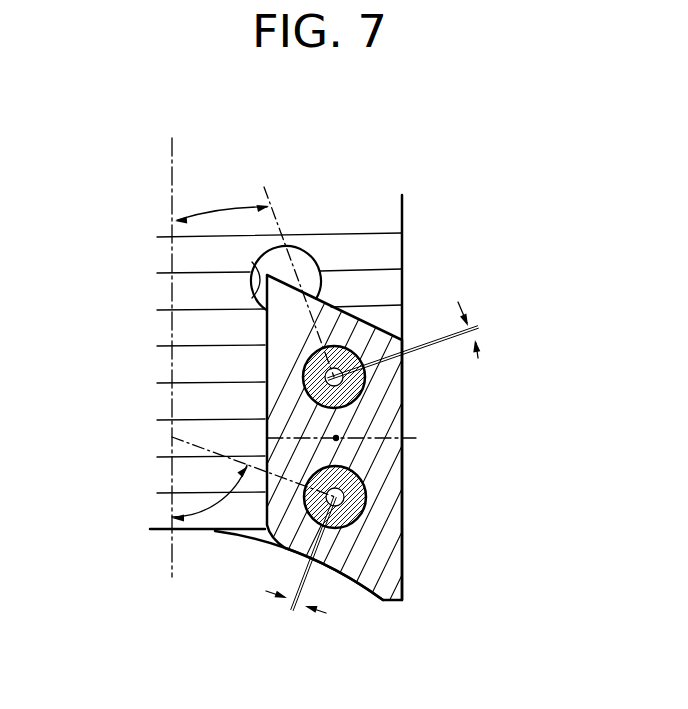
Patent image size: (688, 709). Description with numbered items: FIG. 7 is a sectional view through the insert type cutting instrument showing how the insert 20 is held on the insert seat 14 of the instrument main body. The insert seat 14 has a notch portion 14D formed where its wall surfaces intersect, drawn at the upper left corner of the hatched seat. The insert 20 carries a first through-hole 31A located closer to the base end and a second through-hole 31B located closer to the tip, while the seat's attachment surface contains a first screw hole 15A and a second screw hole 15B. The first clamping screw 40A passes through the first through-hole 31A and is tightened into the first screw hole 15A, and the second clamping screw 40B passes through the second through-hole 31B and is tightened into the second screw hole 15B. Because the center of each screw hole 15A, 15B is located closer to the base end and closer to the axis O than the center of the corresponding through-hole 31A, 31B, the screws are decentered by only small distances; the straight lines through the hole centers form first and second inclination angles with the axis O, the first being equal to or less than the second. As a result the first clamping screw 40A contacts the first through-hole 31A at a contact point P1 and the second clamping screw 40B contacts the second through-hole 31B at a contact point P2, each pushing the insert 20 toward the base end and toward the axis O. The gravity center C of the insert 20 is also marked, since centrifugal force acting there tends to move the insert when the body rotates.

The insert seat 14 is at (353, 226).
The notch portion 14D is at (250, 290).
The first screw hole 15A is at (355, 348).
The second screw hole 15B is at (352, 470).
The insert 20 is at (401, 616).
The first through-hole 31A is at (364, 391).
The second through-hole 31B is at (352, 522).
The first clamping screw 40A is at (304, 362).
The second clamping screw 40B is at (312, 520).
The axis O is at (173, 177).
The contact point P1 is at (320, 342).
The contact point P2 is at (310, 477).
The gravity center C is at (336, 438).